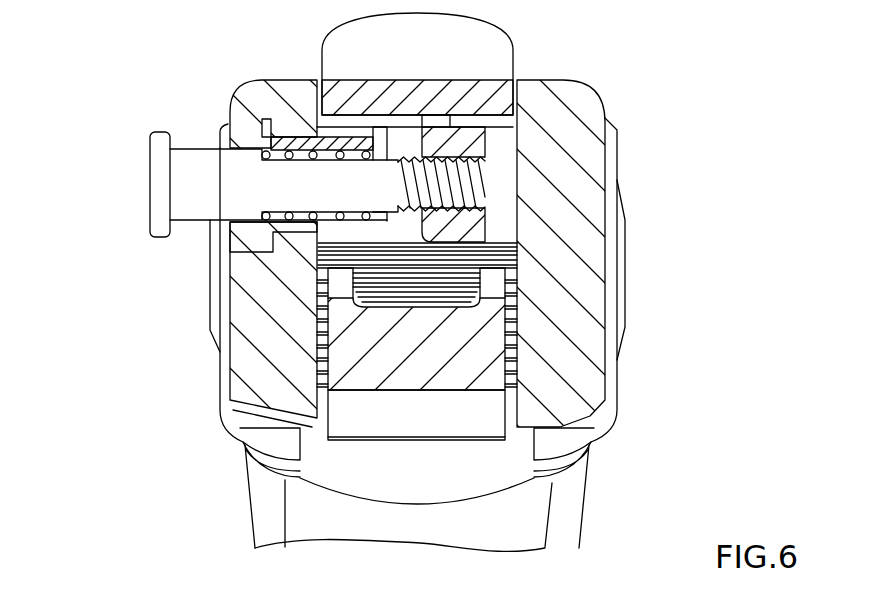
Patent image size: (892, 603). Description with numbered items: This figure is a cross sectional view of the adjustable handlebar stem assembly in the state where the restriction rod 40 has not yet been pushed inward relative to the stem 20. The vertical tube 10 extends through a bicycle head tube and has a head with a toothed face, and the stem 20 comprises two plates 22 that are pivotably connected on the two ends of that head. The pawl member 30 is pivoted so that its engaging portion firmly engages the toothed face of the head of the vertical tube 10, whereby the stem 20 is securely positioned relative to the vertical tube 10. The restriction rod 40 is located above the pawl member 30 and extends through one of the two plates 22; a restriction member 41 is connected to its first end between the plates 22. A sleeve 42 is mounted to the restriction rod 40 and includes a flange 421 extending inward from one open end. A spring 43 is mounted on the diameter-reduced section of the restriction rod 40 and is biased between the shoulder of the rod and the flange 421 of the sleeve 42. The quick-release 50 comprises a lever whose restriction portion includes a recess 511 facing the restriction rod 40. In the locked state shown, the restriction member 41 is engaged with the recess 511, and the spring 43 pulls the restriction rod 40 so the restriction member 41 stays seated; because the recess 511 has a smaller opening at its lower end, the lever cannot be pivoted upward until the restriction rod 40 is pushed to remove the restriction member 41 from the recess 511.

The vertical tube 10 is at (244, 511).
The stem 20 is at (590, 172).
The plates 22 is at (224, 271).
The pawl member 30 is at (432, 380).
The restriction rod 40 is at (151, 176).
The restriction member 41 is at (482, 143).
The sleeve 42 is at (266, 166).
The flange 421 is at (378, 152).
The spring 43 is at (263, 147).
The quick-release 50 is at (503, 59).
The recess 511 is at (437, 120).